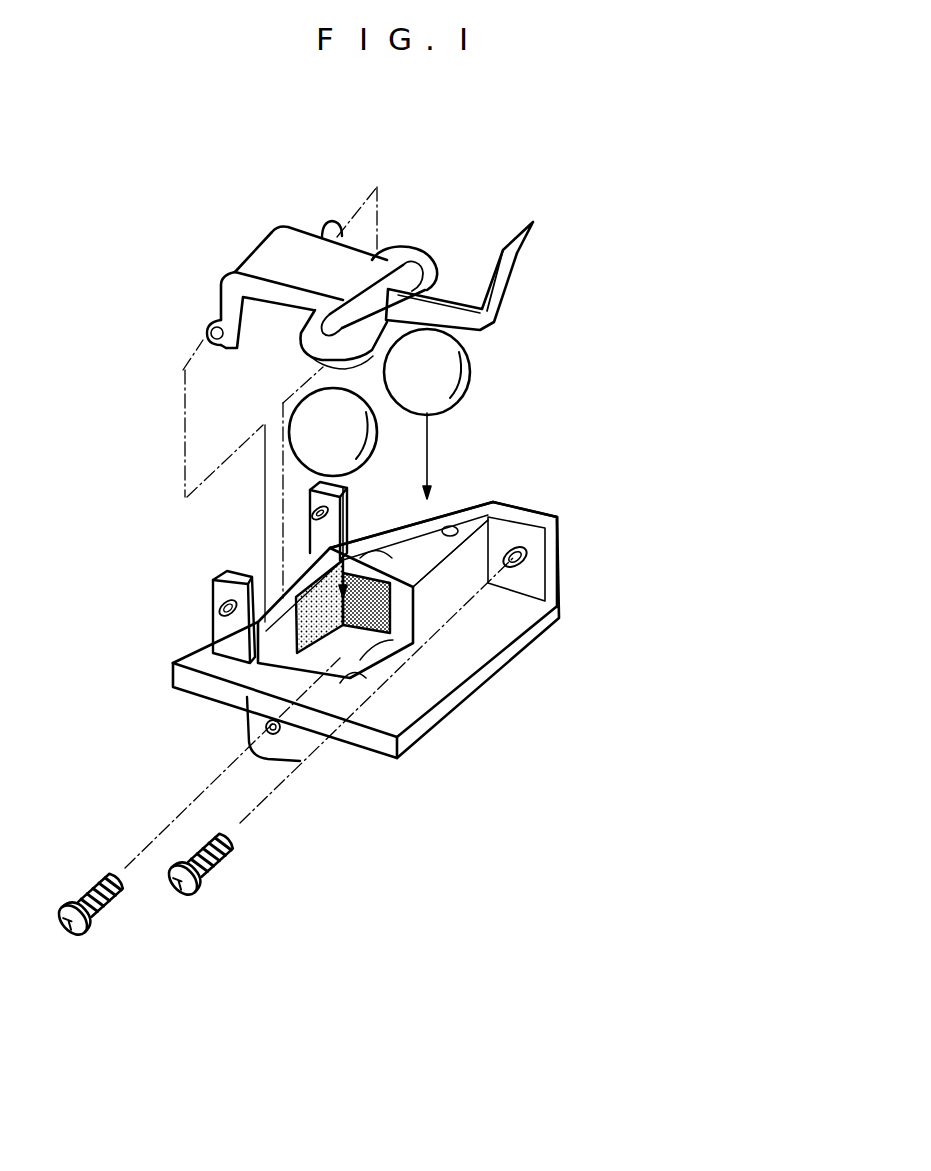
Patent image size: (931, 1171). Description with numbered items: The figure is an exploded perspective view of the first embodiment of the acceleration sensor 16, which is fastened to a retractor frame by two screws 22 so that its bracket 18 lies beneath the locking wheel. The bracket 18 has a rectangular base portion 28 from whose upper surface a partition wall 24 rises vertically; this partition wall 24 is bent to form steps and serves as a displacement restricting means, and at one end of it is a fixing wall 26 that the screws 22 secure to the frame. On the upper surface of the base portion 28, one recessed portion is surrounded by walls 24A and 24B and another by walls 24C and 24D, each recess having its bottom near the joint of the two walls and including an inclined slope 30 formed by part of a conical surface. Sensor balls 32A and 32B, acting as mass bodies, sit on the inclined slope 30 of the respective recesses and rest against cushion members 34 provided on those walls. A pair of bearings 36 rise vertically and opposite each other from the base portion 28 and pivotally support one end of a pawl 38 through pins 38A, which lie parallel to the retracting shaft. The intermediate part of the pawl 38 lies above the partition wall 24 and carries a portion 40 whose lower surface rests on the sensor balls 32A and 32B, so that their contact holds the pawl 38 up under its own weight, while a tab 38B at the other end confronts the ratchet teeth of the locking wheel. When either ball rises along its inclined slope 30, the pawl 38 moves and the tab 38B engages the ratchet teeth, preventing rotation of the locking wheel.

The acceleration sensor 16 is at (125, 468).
The bracket 18 is at (605, 600).
The screws 22 is at (110, 912).
The partition wall 24 is at (447, 536).
The wall 24A is at (260, 688).
The wall 24B is at (418, 605).
The wall 24C is at (364, 566).
The wall 24D is at (466, 519).
The fixing wall 26 is at (522, 505).
The base portion 28 is at (482, 670).
The inclined slope 30 is at (360, 768).
The sensor ball 32A is at (297, 440).
The sensor ball 32B is at (465, 372).
The cushion members 34 is at (420, 603).
The bearings 36 is at (350, 488).
The pawl 38 is at (421, 236).
The pins 38A is at (328, 220).
The tab 38B is at (517, 253).
The portion 40 is at (413, 270).